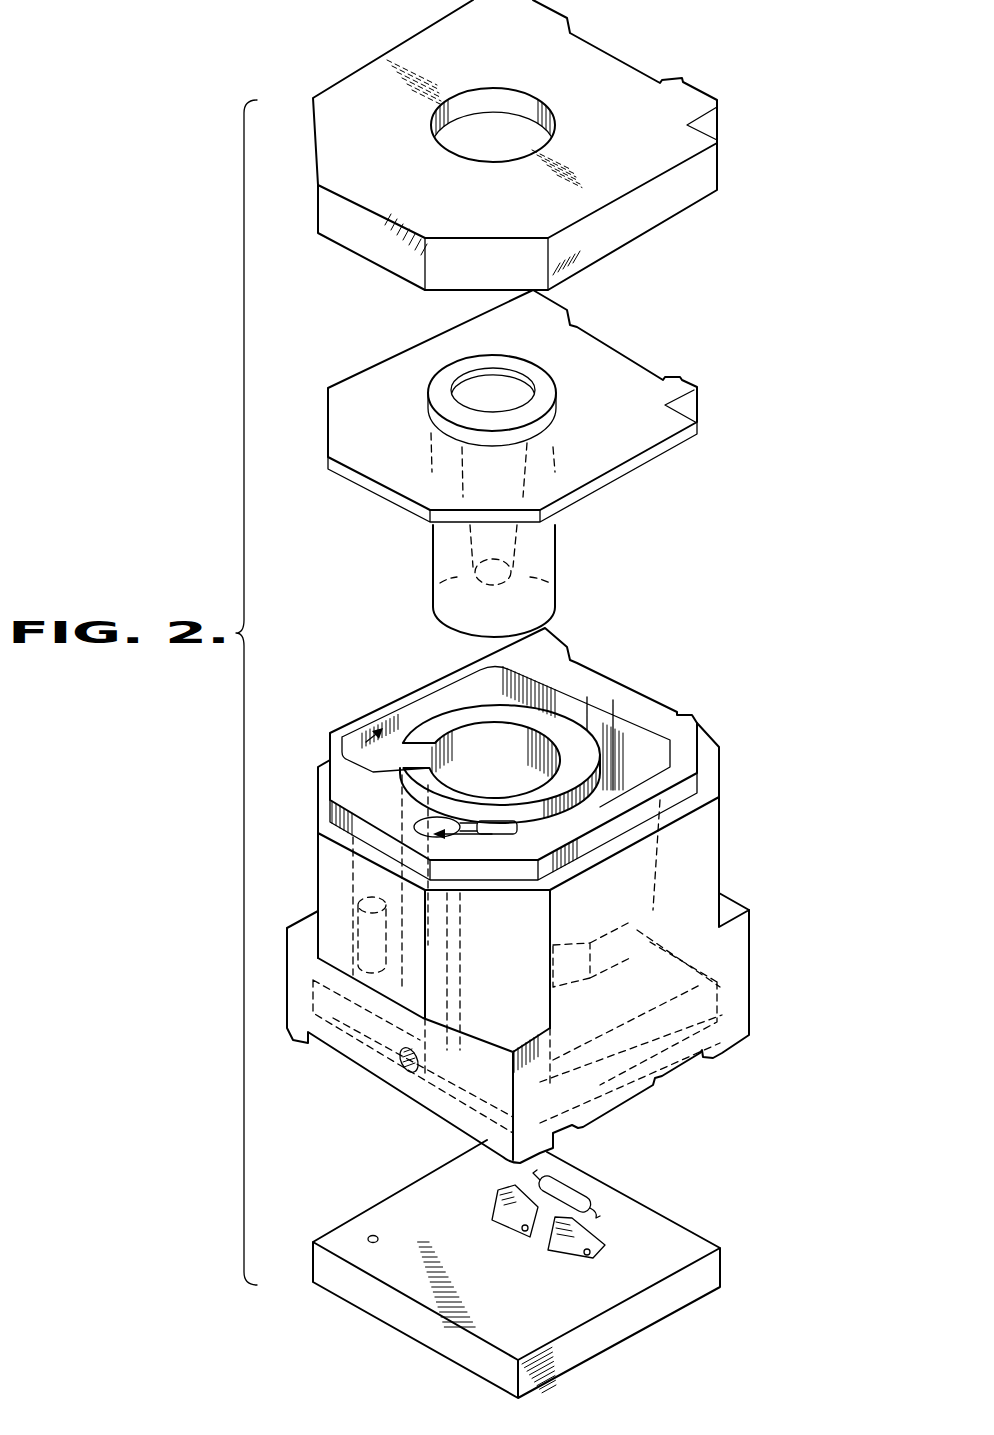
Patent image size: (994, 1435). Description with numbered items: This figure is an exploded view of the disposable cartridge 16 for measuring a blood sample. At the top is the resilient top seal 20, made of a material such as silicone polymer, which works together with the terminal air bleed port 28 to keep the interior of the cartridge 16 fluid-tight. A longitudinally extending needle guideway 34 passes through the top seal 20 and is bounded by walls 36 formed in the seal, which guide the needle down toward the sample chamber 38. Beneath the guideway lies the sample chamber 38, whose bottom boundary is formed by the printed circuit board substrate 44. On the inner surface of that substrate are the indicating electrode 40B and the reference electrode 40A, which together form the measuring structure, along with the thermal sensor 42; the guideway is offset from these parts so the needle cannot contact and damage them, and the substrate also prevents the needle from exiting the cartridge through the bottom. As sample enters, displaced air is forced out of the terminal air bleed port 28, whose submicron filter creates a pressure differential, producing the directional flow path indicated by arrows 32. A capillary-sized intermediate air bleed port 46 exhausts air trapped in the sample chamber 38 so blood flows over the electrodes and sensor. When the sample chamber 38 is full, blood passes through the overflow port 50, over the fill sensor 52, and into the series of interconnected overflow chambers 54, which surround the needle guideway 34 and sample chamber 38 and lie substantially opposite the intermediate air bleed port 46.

The disposable cartridge 16 is at (776, 228).
The top seal 20 is at (621, 478).
The needle guideway 34 is at (521, 386).
The overflow chambers 54 is at (463, 685).
The walls 36 is at (496, 781).
The flow path arrows 32 is at (372, 757).
The fill sensor 52 is at (316, 889).
The overflow port 50 is at (377, 927).
The intermediate air bleed port 46 is at (603, 886).
The sample chamber 38 is at (640, 937).
The terminal air bleed port 28 is at (404, 1066).
The printed circuit board substrate 44 is at (687, 1237).
The reference electrode 40A is at (567, 1255).
The indicating electrode 40B is at (497, 1205).
The thermal sensor 42 is at (590, 1193).